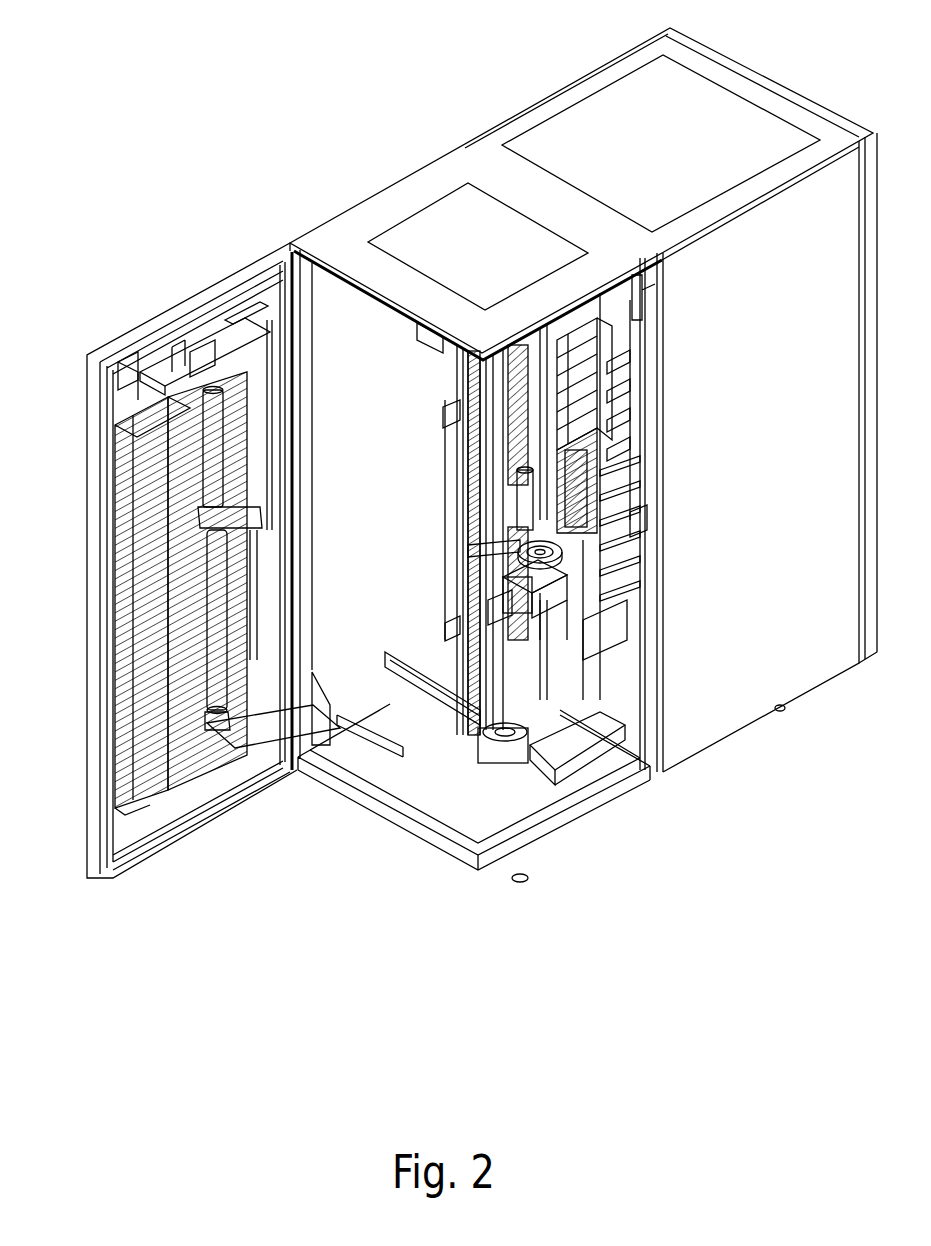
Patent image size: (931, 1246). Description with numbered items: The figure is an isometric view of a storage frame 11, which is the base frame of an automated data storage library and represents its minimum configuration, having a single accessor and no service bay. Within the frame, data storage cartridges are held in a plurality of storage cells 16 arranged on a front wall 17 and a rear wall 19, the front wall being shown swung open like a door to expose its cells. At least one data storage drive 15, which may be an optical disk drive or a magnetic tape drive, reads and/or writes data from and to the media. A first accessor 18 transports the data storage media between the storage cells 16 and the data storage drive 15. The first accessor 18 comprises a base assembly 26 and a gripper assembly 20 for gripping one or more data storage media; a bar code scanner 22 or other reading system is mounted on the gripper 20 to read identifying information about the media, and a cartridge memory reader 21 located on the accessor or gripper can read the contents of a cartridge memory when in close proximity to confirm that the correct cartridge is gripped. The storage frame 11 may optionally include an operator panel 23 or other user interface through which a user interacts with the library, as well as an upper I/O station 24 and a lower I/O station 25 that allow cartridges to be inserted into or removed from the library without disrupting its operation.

The storage frame 11 is at (361, 906).
The data storage drive 15 is at (620, 348).
The storage cells 16 is at (106, 688).
The front wall 17 is at (94, 540).
The first accessor 18 is at (523, 787).
The rear wall 19 is at (458, 438).
The gripper assembly 20 is at (610, 567).
The cartridge memory reader 21 is at (573, 547).
The bar code scanner 22 is at (498, 596).
The operator panel 23 is at (270, 363).
The upper I/O station 24 is at (268, 393).
The lower I/O station 25 is at (247, 593).
The base assembly 26 is at (535, 768).